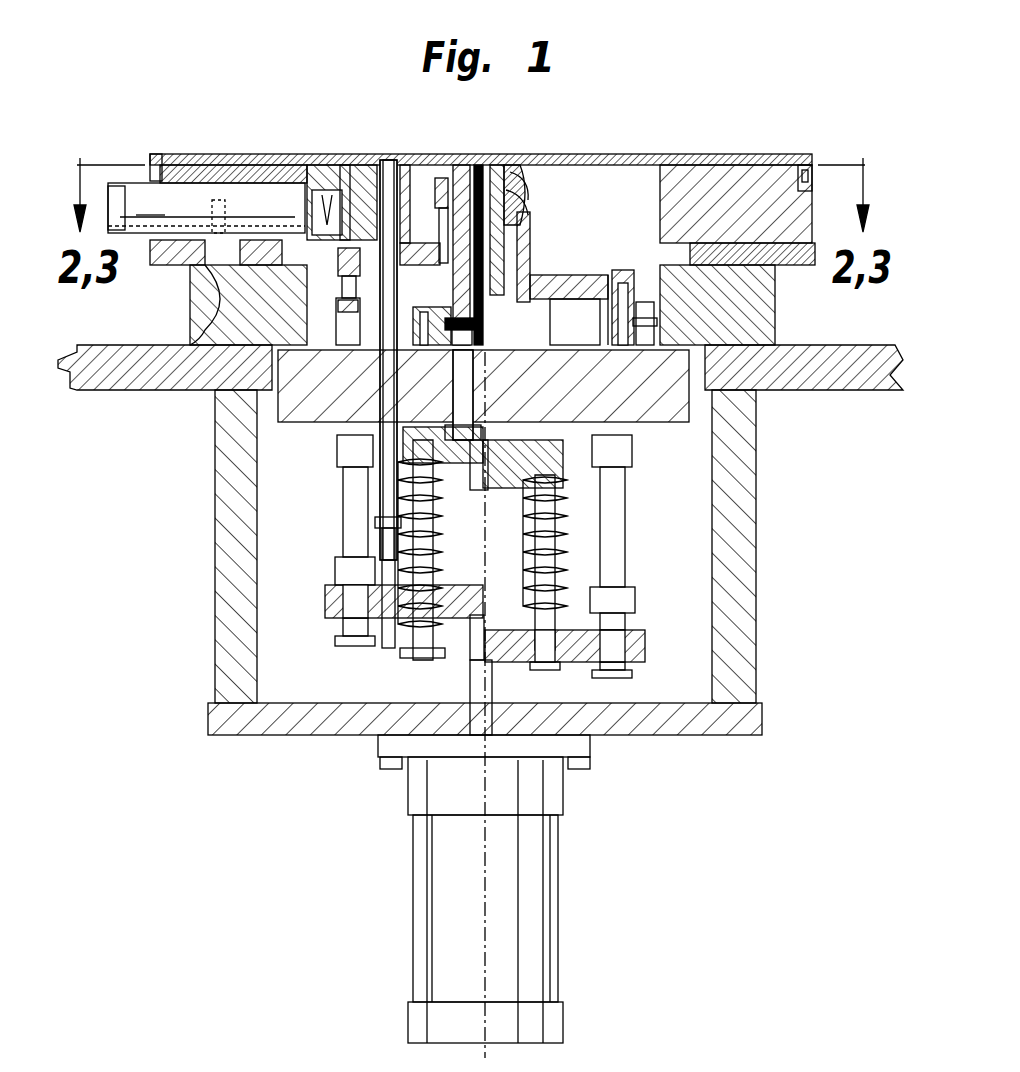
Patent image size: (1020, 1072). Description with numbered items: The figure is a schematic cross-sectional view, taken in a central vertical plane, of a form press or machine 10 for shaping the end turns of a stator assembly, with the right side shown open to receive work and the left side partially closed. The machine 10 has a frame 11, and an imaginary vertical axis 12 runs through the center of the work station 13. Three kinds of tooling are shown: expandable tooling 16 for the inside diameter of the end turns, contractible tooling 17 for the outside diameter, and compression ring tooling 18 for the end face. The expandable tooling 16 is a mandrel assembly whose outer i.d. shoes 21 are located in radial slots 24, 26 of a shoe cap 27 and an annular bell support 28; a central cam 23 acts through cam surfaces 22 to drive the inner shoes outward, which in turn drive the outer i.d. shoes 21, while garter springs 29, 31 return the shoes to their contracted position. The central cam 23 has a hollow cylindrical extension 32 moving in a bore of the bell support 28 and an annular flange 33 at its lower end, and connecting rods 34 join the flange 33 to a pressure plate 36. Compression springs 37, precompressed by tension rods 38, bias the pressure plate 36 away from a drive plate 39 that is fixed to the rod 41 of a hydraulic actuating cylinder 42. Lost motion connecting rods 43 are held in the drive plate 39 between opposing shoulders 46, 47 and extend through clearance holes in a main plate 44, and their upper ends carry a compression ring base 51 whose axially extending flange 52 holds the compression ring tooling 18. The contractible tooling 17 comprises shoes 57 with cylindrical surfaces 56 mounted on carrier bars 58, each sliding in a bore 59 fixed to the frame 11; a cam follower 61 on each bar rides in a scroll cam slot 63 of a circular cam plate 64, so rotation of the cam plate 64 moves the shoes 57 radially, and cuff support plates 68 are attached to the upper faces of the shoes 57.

The machine 10 is at (650, 118).
The frame 11 is at (822, 345).
The vertical axis 12 is at (487, 155).
The work station 13 is at (462, 142).
The expandable tooling 16 is at (442, 158).
The contractible tooling 17 is at (330, 155).
The compression ring tooling 18 is at (535, 229).
The outer i.d. shoes 21 is at (535, 210).
The cam surfaces 22 is at (520, 158).
The central cam 23 is at (530, 190).
The radial slots 24 is at (508, 155).
The radial slots 26 is at (532, 250).
The shoe cap 27 is at (498, 155).
The bell support 28 is at (575, 322).
The garter spring 29 is at (448, 158).
The garter spring 31 is at (436, 245).
The hollow cylindrical extension 32 is at (458, 268).
The annular flange 33 is at (448, 318).
The connecting rods 34 is at (458, 393).
The pressure plate 36 is at (507, 488).
The compression springs 37 is at (550, 490).
The tension rods 38 is at (555, 640).
The drive plate 39 is at (646, 646).
The rod 41 is at (468, 690).
The hydraulic actuating cylinder 42 is at (578, 920).
The lost motion connecting rods 43 is at (628, 555).
The main plate 44 is at (666, 422).
The shoulder 46 is at (637, 605).
The shoulder 47 is at (640, 672).
The compression ring base 51 is at (622, 270).
The axially extending flange 52 is at (437, 195).
The cylindrical surfaces 56 is at (392, 158).
The shoes 57 is at (345, 243).
The carrier bars 58 is at (207, 199).
The bore 59 is at (215, 198).
The cam follower 61 is at (205, 265).
The scroll cam slot 63 is at (195, 330).
The cam plate 64 is at (158, 265).
The cuff support plates 68 is at (345, 155).